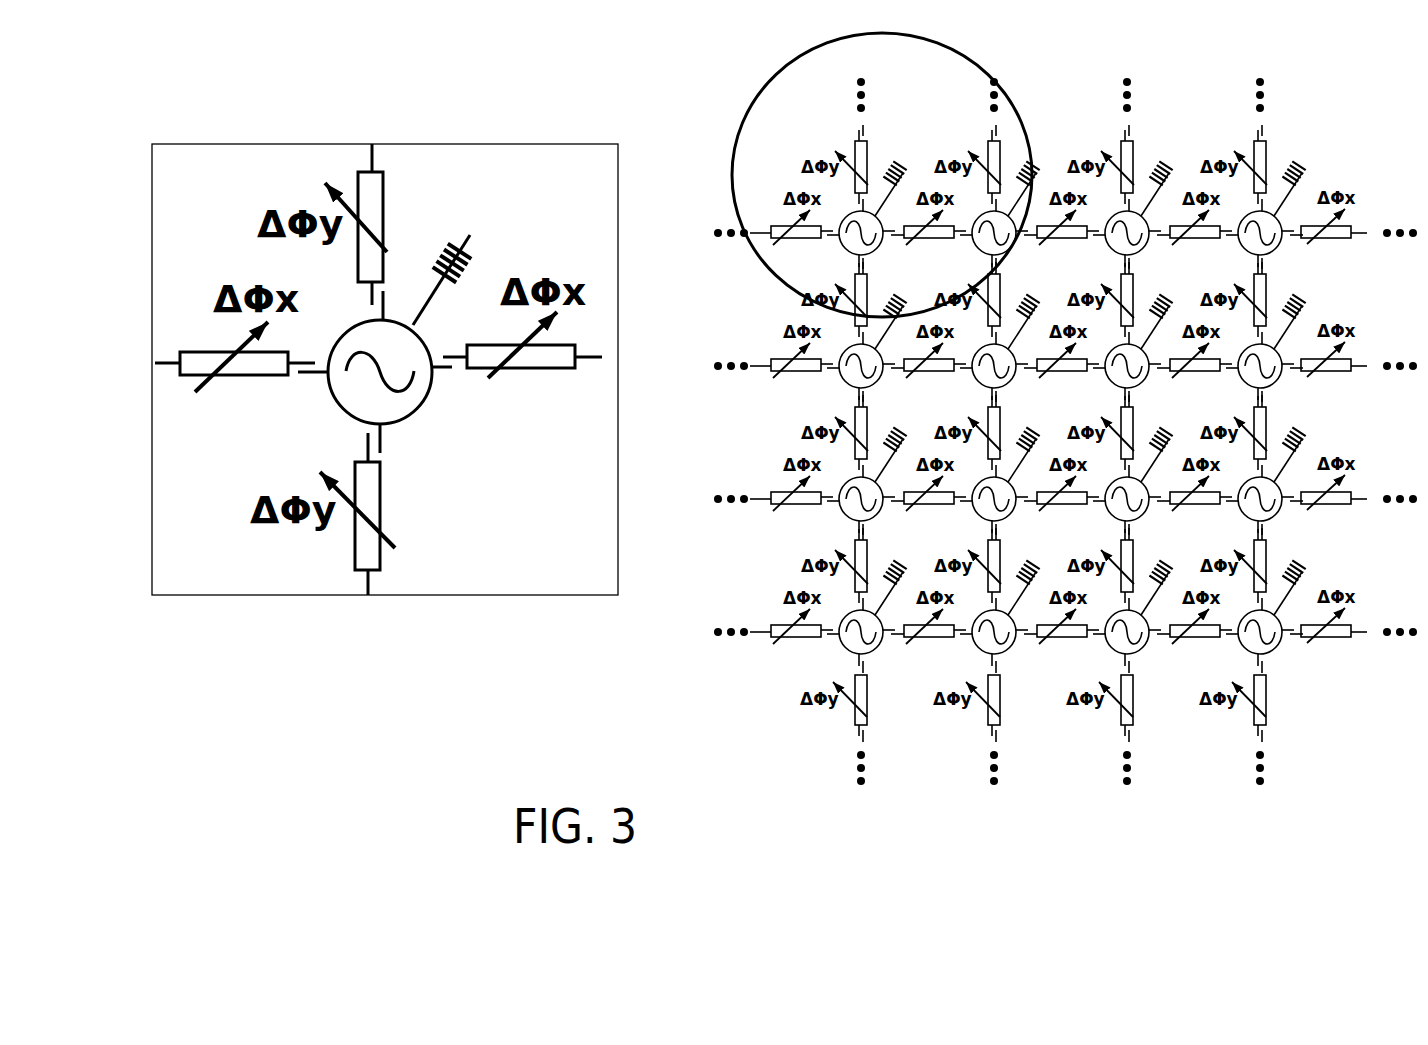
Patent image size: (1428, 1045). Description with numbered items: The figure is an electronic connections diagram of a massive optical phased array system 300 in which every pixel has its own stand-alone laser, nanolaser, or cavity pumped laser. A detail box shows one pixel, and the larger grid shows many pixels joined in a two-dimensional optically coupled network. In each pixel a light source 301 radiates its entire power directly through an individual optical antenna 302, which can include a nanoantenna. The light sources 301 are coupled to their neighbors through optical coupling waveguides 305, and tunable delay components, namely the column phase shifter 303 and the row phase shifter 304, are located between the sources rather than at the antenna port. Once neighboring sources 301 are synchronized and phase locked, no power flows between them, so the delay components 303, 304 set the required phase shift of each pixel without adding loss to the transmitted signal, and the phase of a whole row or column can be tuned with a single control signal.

The phased array system 300 is at (712, 88).
The light source 301 is at (393, 392).
The optical antenna 302 is at (469, 240).
The column phase shifter 303 is at (355, 175).
The row phase shifter 304 is at (245, 378).
The optical coupling waveguide 305 is at (316, 372).